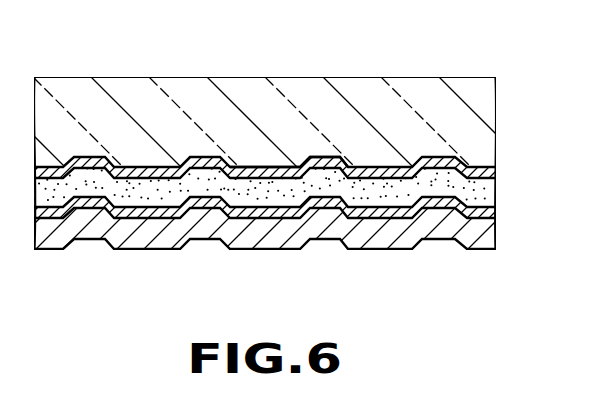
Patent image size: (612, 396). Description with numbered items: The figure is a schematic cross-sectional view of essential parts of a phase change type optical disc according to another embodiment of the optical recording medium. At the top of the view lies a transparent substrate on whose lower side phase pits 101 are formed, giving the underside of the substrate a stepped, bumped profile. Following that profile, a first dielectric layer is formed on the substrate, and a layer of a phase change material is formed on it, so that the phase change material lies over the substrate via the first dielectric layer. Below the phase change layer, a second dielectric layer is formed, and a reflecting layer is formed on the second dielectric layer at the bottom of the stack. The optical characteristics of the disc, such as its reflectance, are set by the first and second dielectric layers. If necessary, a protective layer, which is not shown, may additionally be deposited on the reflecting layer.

The phase pits 101 is at (333, 157).